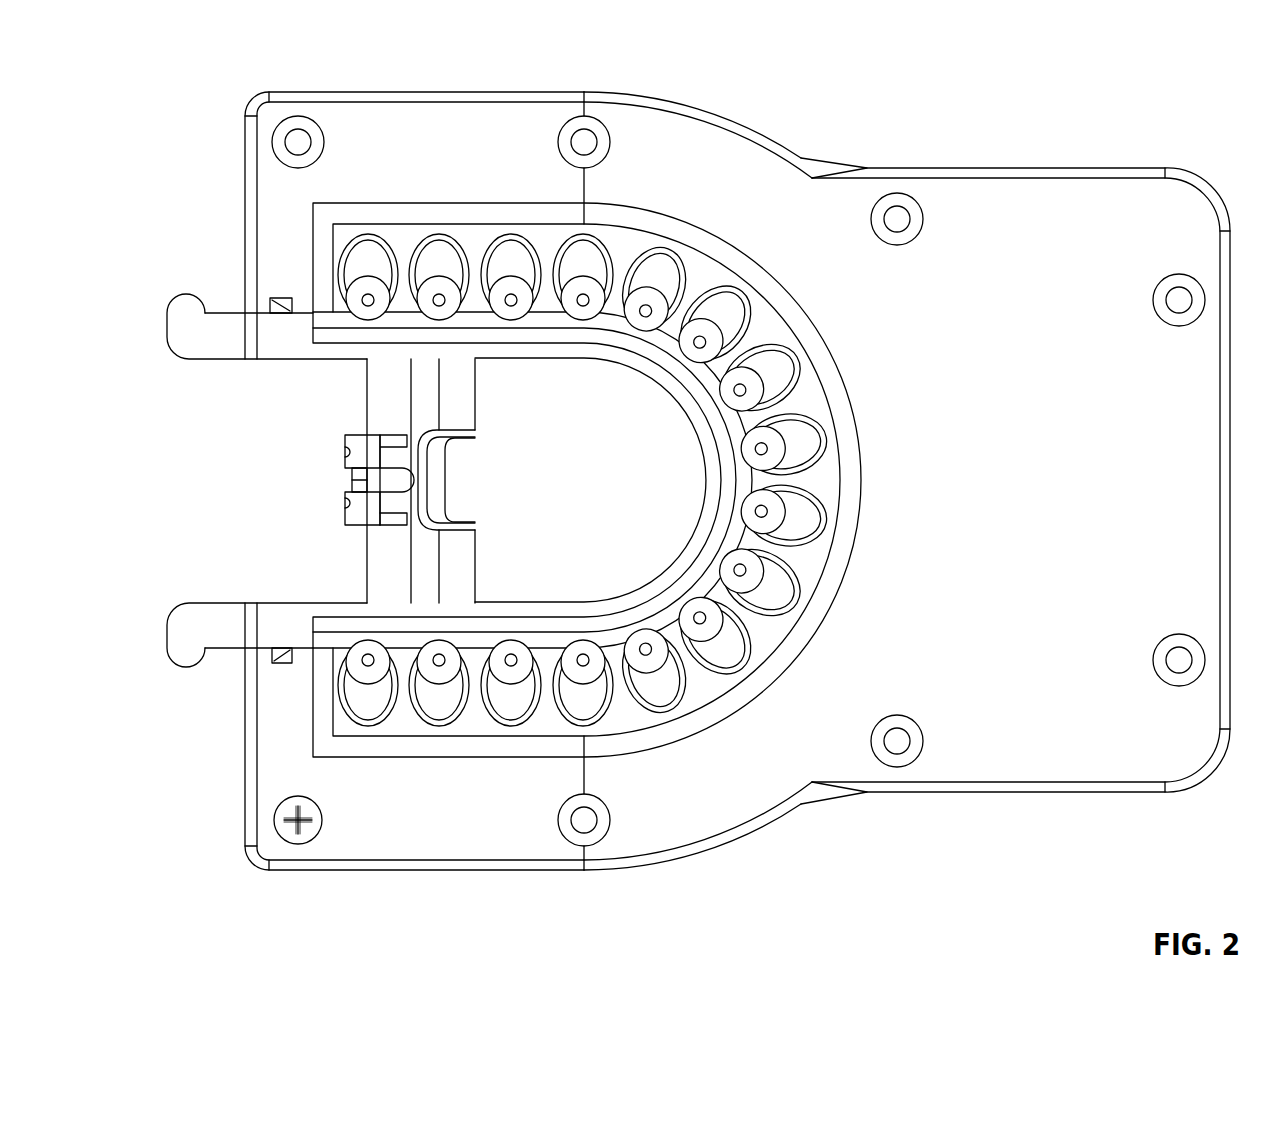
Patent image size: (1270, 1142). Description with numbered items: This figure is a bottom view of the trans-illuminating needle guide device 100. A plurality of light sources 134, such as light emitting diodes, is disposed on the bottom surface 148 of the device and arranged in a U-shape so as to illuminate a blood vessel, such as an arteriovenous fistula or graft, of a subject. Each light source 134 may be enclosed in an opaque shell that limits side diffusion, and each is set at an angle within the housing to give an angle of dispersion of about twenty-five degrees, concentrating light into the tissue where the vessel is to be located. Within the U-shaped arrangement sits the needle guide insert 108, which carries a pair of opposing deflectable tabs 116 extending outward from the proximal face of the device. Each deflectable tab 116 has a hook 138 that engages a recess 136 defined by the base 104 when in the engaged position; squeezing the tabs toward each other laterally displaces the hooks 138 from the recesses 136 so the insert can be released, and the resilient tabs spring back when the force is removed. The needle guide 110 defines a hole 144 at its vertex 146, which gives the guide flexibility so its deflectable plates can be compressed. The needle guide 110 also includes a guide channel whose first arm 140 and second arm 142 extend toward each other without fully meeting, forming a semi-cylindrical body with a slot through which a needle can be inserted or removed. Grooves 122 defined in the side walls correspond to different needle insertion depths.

The trans-illuminating needle guide device 100 is at (1153, 69).
The base 104 is at (413, 96).
The needle guide insert 108 is at (688, 546).
The needle guide 110 is at (365, 413).
The deflectable tabs 116 is at (188, 330).
The grooves 122 is at (360, 480).
The light sources 134 is at (428, 708).
The recess 136 is at (279, 297).
The hook 138 is at (283, 315).
The first arm 140 is at (352, 447).
The second arm 142 is at (357, 515).
The hole 144 is at (442, 484).
The vertex 146 is at (465, 556).
The bottom surface 148 is at (800, 752).